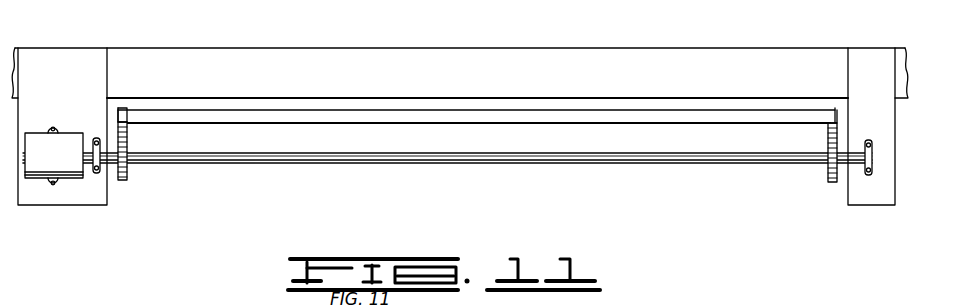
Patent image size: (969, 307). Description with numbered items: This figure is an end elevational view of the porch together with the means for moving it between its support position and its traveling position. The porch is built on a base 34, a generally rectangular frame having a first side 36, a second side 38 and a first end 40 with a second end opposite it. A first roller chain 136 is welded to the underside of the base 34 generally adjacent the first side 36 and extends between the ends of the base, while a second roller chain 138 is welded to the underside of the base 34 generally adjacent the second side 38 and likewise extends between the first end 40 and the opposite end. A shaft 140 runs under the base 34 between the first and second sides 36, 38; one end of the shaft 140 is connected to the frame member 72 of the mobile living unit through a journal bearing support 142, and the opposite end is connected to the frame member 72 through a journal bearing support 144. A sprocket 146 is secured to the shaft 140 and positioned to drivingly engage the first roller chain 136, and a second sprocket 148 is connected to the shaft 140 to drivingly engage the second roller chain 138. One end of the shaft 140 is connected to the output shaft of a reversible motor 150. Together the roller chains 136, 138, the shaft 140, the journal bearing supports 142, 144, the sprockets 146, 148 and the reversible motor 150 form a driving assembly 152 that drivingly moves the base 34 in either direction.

The base 34 is at (468, 115).
The first side 36 is at (836, 118).
The second side 38 is at (118, 118).
The first end 40 is at (380, 112).
The frame member 72 is at (278, 62).
The first roller chain 136 is at (830, 125).
The second roller chain 138 is at (122, 122).
The shaft 140 is at (456, 163).
The journal bearing support 142 is at (866, 165).
The journal bearing support 144 is at (95, 172).
The sprocket 146 is at (829, 172).
The second sprocket 148 is at (128, 176).
The reversible motor 150 is at (48, 160).
The driving assembly 152 is at (128, 197).